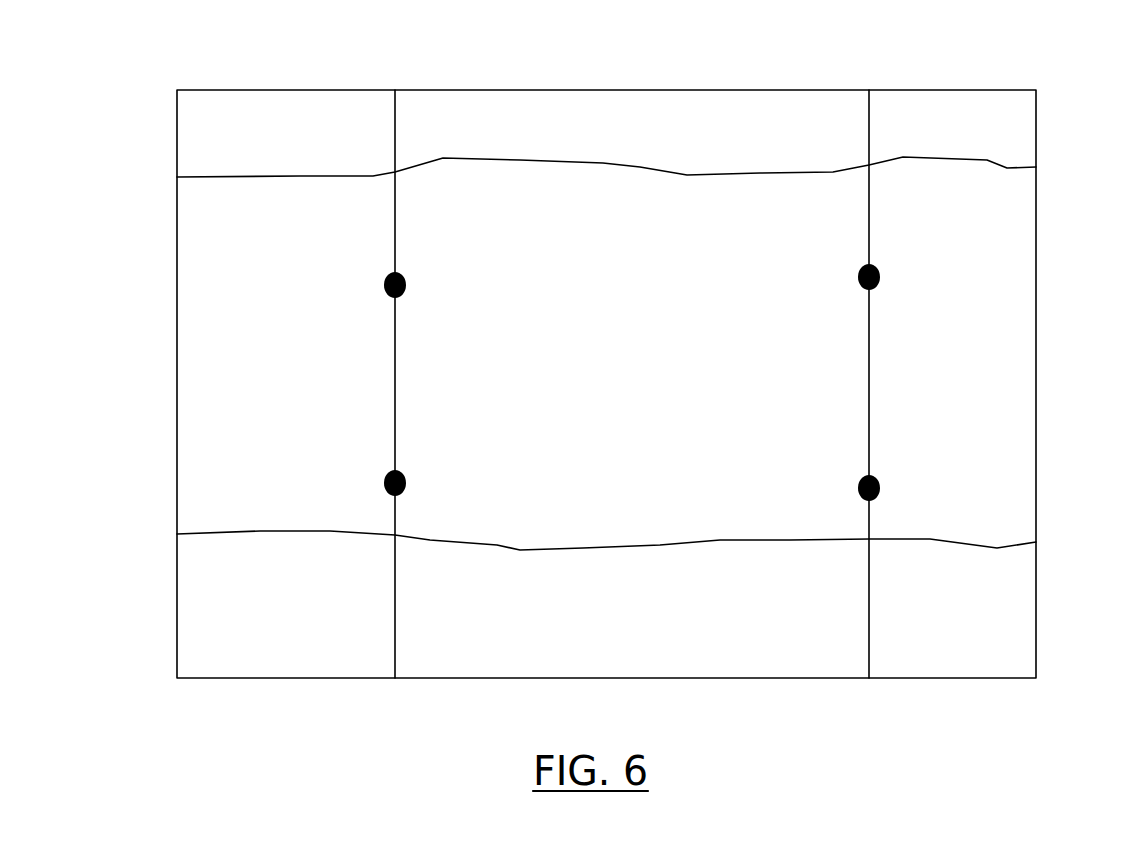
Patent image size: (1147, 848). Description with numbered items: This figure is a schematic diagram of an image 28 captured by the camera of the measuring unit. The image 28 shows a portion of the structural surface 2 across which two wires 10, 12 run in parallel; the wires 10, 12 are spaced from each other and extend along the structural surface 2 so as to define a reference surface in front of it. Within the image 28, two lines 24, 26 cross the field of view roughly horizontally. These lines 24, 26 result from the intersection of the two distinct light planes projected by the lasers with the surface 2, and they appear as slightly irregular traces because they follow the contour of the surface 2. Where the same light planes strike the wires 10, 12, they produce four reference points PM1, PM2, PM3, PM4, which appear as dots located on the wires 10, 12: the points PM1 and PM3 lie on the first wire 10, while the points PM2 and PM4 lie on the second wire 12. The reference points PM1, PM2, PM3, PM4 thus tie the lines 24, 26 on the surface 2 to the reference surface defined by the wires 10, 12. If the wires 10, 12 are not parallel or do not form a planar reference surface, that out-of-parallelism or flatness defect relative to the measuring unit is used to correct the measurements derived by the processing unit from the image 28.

The structural surface 2 is at (1005, 205).
The wire 10 is at (395, 347).
The wire 12 is at (869, 347).
The line 24 is at (605, 163).
The line 26 is at (583, 547).
The image 28 is at (177, 153).
The reference point PM1 is at (423, 502).
The reference point PM2 is at (900, 507).
The reference point PM3 is at (426, 275).
The reference point PM4 is at (902, 266).